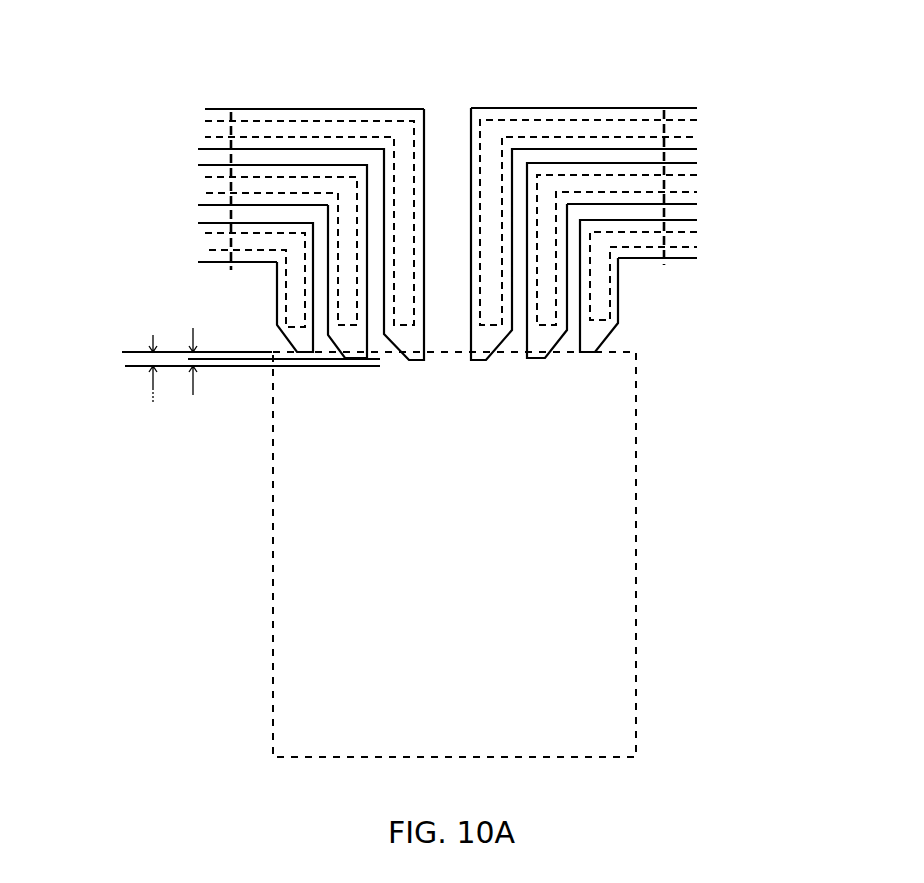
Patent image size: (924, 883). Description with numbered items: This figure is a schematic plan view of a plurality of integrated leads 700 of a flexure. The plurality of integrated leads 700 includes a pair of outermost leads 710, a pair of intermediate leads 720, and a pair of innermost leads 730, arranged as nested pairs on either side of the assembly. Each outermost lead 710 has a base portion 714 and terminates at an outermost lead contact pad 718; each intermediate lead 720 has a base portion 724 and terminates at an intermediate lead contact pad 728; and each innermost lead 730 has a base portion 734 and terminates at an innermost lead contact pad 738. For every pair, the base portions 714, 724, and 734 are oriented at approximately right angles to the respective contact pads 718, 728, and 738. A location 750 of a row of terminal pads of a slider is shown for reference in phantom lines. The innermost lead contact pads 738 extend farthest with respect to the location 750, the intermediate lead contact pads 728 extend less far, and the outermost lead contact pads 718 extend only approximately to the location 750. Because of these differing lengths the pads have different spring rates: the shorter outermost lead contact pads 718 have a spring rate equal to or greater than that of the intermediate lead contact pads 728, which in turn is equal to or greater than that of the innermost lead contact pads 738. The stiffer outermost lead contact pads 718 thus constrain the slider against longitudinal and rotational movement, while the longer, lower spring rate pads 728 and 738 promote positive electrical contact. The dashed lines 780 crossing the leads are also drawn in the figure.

The plurality of integrated leads 700 is at (507, 57).
The outermost leads 710 is at (181, 256).
The base portions of outermost leads 714 is at (208, 268).
The outermost lead contact pads 718 is at (310, 365).
The intermediate leads 720 is at (182, 189).
The base portions of intermediate leads 724 is at (148, 218).
The intermediate lead contact pads 728 is at (367, 362).
The innermost leads 730 is at (182, 137).
The base portions of innermost leads 734 is at (207, 110).
The innermost lead contact pads 738 is at (424, 362).
The location of row of terminal pads of slider 750 is at (223, 350).
The gate line 780 is at (236, 130).